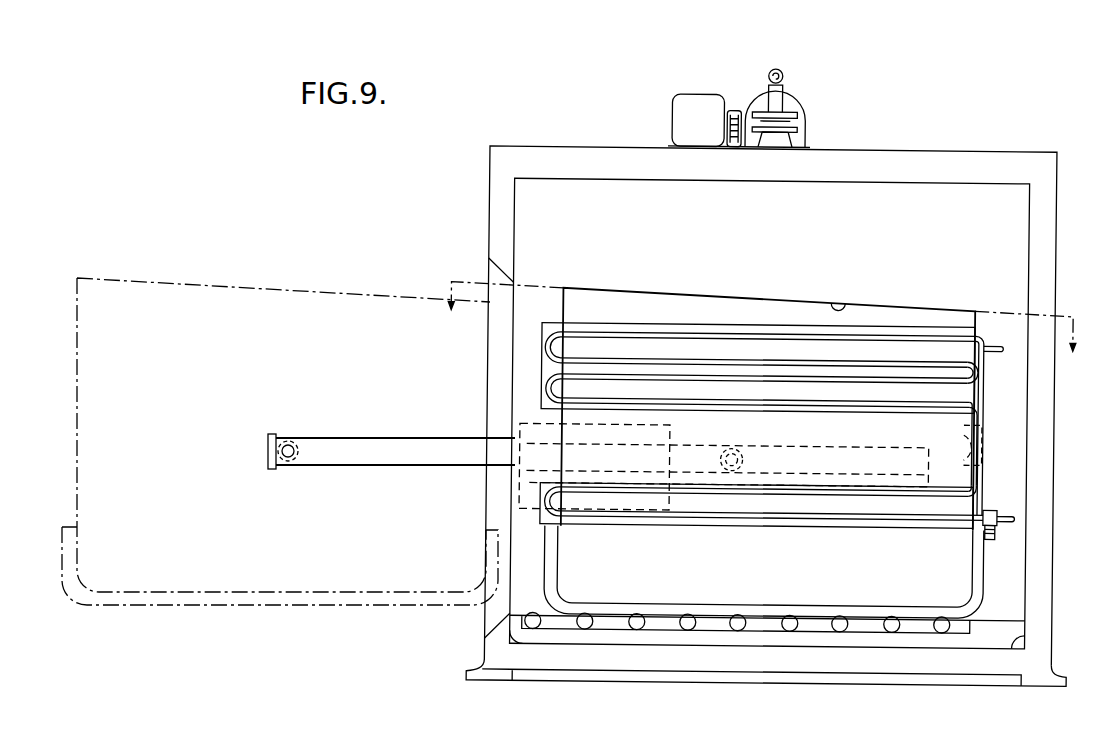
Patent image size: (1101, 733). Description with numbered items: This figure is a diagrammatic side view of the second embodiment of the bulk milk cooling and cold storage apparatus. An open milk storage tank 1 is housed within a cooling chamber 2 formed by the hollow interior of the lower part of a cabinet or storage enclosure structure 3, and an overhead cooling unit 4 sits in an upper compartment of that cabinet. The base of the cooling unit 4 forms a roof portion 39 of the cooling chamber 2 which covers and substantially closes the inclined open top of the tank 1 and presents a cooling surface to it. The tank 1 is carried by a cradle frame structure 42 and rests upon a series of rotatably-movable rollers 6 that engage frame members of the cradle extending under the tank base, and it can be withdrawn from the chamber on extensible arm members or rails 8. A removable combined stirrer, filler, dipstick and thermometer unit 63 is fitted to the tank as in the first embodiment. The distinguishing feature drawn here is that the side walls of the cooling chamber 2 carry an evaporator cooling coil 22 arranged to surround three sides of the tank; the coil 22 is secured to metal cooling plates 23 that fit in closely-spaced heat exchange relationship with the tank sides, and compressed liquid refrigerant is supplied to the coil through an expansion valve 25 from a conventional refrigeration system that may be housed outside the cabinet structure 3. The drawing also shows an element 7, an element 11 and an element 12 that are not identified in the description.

The open milk storage tank 1 is at (228, 300).
The cooling chamber 2 is at (542, 292).
The cabinet or storage enclosure structure 3 is at (565, 165).
The cooling unit 4 is at (913, 200).
The rollers 6 is at (647, 624).
The pan 7 is at (837, 462).
The extensible arm members or rails 8 is at (332, 437).
The pivot 11 is at (727, 448).
The bracket 12 is at (990, 440).
The evaporator cooling coil 22 is at (737, 362).
The metal cooling plates 23 is at (660, 328).
The expansion valve 25 is at (995, 537).
The roof portion 39 is at (846, 300).
The cradle frame structure 42 is at (556, 566).
The combined stirrer, filler, dipstick and thermometer unit 63 is at (800, 118).